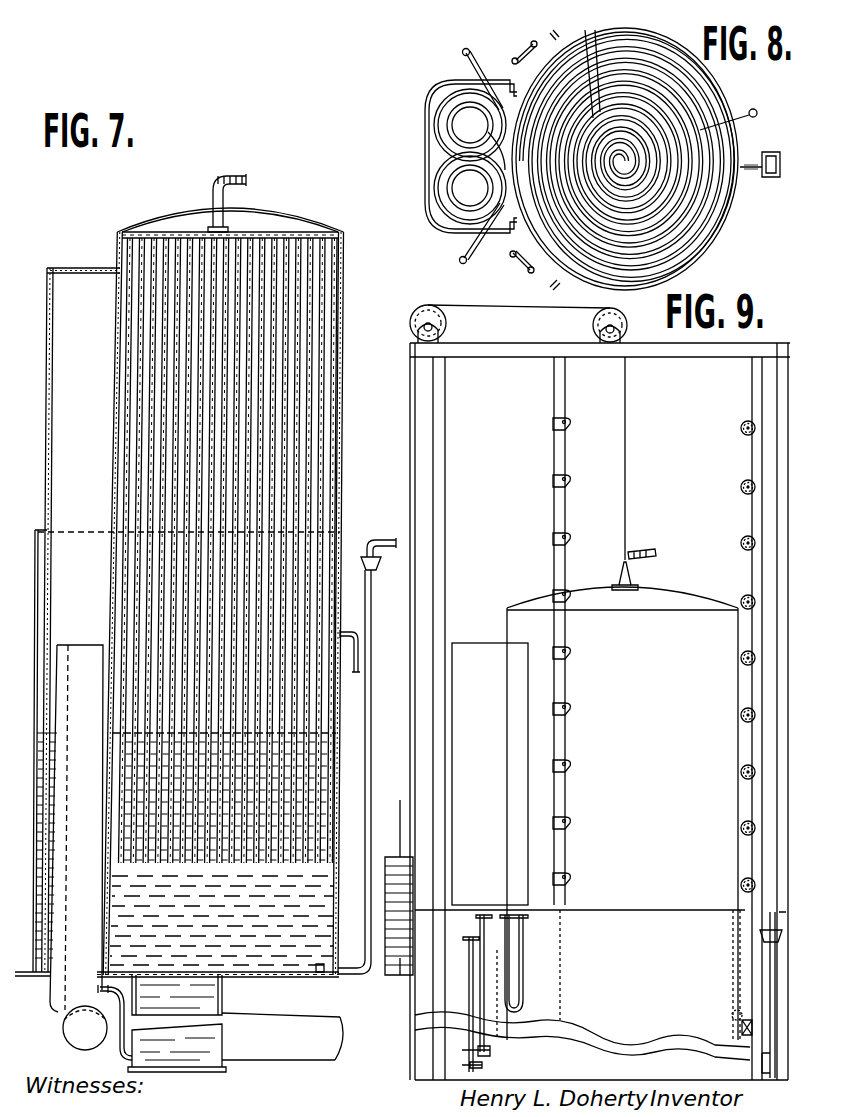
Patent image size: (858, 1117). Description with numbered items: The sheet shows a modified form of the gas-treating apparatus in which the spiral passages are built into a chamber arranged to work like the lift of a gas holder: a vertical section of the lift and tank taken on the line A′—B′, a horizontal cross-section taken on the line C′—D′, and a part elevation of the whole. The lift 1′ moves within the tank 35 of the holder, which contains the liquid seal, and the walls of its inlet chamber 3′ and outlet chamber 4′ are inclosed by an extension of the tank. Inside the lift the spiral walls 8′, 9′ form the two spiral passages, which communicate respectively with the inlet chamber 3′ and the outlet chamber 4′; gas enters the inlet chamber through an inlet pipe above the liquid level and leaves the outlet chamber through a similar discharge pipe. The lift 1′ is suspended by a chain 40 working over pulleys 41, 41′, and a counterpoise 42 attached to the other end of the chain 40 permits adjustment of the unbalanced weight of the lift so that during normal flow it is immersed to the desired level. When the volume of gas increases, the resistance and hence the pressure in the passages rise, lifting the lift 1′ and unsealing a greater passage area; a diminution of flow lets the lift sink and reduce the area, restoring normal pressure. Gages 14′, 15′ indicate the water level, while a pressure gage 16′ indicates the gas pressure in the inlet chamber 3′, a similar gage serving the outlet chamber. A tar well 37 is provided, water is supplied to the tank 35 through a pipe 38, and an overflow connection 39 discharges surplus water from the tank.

In FIG. 7, the lift 1′ is at (343, 275).
In FIG. 8, the lift 1′ is at (638, 46).
In FIG. 9, the lift 1′ is at (622, 813).
In FIG. 7, the inlet chamber 3′ is at (67, 622).
In FIG. 8, the inlet chamber 3′ is at (442, 178).
In FIG. 8, the outlet chamber 4′ is at (442, 107).
In FIG. 7, the spiral wall 8′ is at (267, 330).
In FIG. 8, the spiral wall 8′ is at (697, 196).
In FIG. 7, the spiral wall 9′ is at (268, 380).
In FIG. 8, the spiral wall 9′ is at (702, 147).
In FIG. 8, the gage 14′ is at (486, 74).
In FIG. 8, the gage 15′ is at (482, 239).
In FIG. 9, the gage 15′ is at (469, 982).
In FIG. 8, the gas pressure gage 16′ is at (523, 270).
In FIG. 9, the gas pressure gage 16′ is at (512, 944).
In FIG. 9, the tank 35 is at (582, 985).
In FIG. 7, the tar well 37 is at (222, 995).
In FIG. 7, the water supply pipe 38 is at (371, 720).
In FIG. 8, the water supply pipe 38 is at (755, 109).
In FIG. 9, the water supply pipe 38 is at (760, 1062).
In FIG. 7, the overflow connection 39 is at (358, 642).
In FIG. 9, the overflow connection 39 is at (744, 1020).
In FIG. 9, the chain 40 is at (625, 443).
In FIG. 9, the pulley 41 is at (592, 328).
In FIG. 9, the pulley 41′ is at (446, 328).
In FIG. 7, the counterpoise 42 is at (399, 903).
In FIG. 8, the section line A′ is at (392, 200).
In FIG. 8, the section line B′ is at (772, 125).
In FIG. 7, the section line C′ is at (398, 683).
In FIG. 7, the section line D′ is at (387, 665).